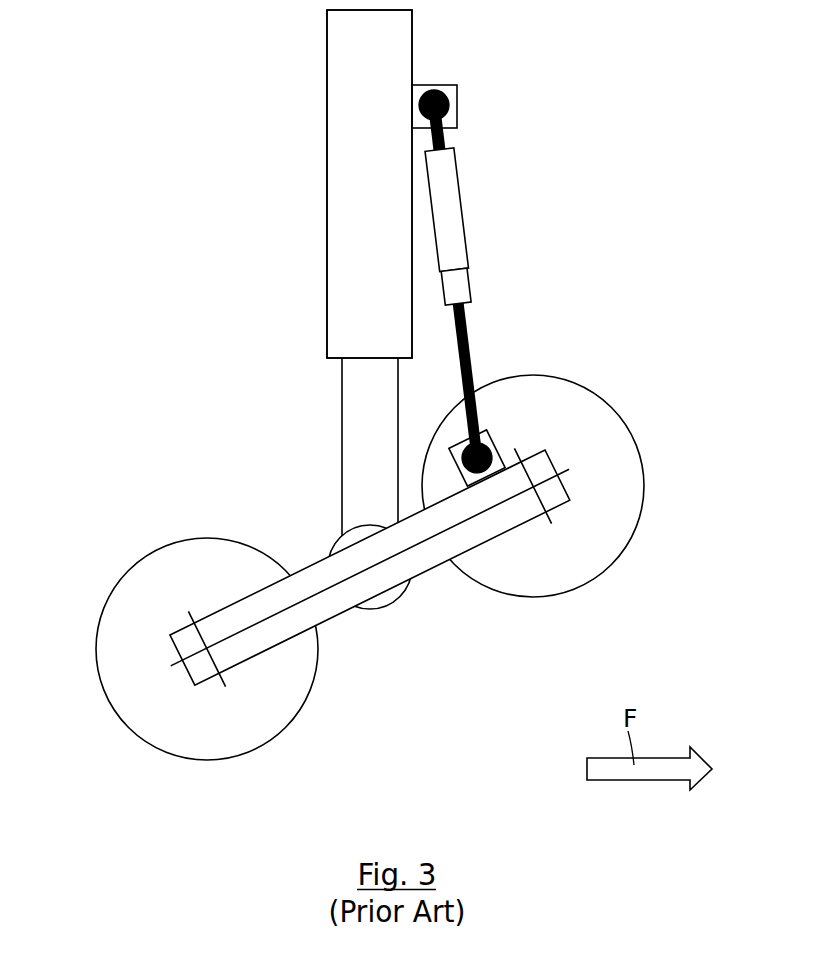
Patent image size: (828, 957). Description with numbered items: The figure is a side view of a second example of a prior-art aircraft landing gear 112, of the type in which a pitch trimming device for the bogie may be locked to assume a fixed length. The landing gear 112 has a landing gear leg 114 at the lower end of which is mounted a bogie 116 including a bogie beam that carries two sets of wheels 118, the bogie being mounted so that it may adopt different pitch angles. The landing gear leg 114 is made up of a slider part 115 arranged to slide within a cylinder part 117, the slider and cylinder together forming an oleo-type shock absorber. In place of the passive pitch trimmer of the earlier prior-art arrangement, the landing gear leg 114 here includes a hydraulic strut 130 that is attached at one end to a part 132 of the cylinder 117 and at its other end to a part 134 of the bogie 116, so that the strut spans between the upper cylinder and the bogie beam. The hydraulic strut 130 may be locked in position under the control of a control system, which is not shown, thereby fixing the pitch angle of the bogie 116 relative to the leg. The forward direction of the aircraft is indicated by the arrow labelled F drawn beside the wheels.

The landing gear 112 is at (150, 302).
The landing gear leg 114 is at (343, 298).
The slider part 115 is at (350, 418).
The bogie 116 is at (333, 596).
The cylinder part 117 is at (353, 172).
The wheels 118 is at (120, 678).
The hydraulic strut 130 is at (462, 207).
The part of the cylinder 132 is at (449, 97).
The part of the bogie 134 is at (485, 438).